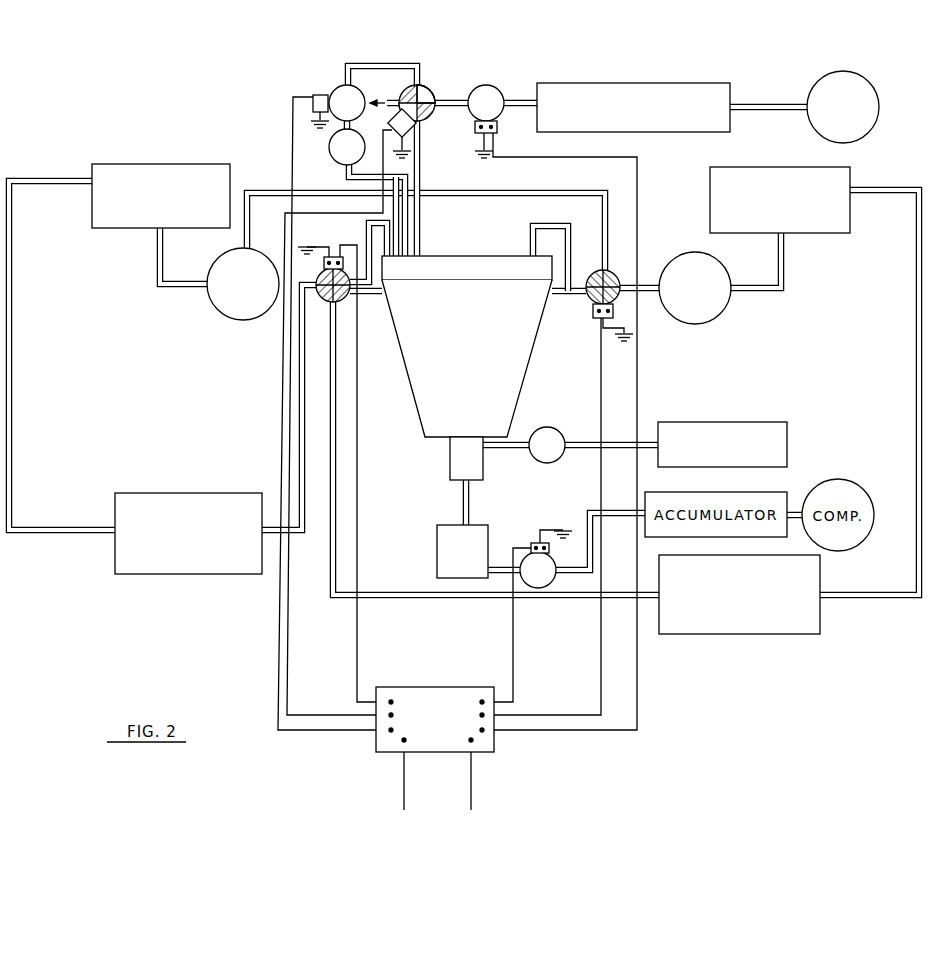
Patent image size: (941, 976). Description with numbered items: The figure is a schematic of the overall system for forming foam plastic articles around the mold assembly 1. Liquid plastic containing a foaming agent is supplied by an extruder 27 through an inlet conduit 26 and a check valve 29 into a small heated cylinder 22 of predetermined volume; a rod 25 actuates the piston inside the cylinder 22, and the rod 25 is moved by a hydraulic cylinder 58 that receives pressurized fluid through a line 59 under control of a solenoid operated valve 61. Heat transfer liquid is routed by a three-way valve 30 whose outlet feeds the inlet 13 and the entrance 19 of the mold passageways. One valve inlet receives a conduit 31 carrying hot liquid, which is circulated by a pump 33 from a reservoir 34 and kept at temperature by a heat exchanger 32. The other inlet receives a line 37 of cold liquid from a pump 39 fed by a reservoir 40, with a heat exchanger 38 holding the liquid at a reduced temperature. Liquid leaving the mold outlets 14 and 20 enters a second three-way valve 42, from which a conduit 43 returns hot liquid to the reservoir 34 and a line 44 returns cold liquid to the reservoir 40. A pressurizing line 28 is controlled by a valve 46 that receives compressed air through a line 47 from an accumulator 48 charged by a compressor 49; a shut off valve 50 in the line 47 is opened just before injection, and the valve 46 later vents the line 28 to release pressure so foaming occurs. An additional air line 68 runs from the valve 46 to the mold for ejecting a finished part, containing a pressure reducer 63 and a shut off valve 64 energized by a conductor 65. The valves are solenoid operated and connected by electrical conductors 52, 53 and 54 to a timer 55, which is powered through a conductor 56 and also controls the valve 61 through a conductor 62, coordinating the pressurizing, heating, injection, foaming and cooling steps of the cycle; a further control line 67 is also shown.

The mold assembly 1 is at (537, 357).
The inlet to passageway 13 is at (554, 295).
The outlet of mold assembly 14 is at (376, 294).
The entrance for passageway 19 is at (530, 233).
The outlet of mold assembly 20 is at (366, 223).
The cylinder 22 is at (460, 450).
The rod 25 is at (470, 497).
The inlet conduit 26 is at (494, 449).
The extruder 27 is at (725, 425).
The pressurizing line 28 is at (422, 237).
The check valve 29 is at (540, 463).
The three-way valve 30 is at (608, 270).
The conduit 31 is at (647, 282).
The heat exchanger 32 is at (810, 617).
The pump 33 is at (698, 305).
The reservoir 34 is at (808, 233).
The line 37 is at (500, 190).
The heat exchanger 38 is at (213, 492).
The pump 39 is at (222, 300).
The reservoir 40 is at (118, 230).
The three-way valve 42 is at (323, 276).
The conduit 43 is at (416, 596).
The line 44 is at (302, 535).
The control valve 46 is at (425, 114).
The line 47 is at (508, 108).
The accumulator 48 is at (655, 84).
The compressor 49 is at (850, 92).
The shut off valve 50 is at (492, 90).
The electrical conductor 52 is at (600, 398).
The electrical conductor 53 is at (358, 468).
The electrical conductor 54 is at (283, 603).
The timer 55 is at (452, 684).
The conductor 56 is at (473, 789).
The hydraulic cylinder 58 is at (437, 541).
The line 59 is at (588, 521).
The solenoid operated valve 61 is at (553, 576).
The conductor 62 is at (515, 648).
The pressure reducer 63 is at (340, 147).
The shut off valve 64 is at (343, 90).
The conductor 65 is at (292, 178).
The control line 67 is at (640, 184).
The air line 68 is at (408, 212).